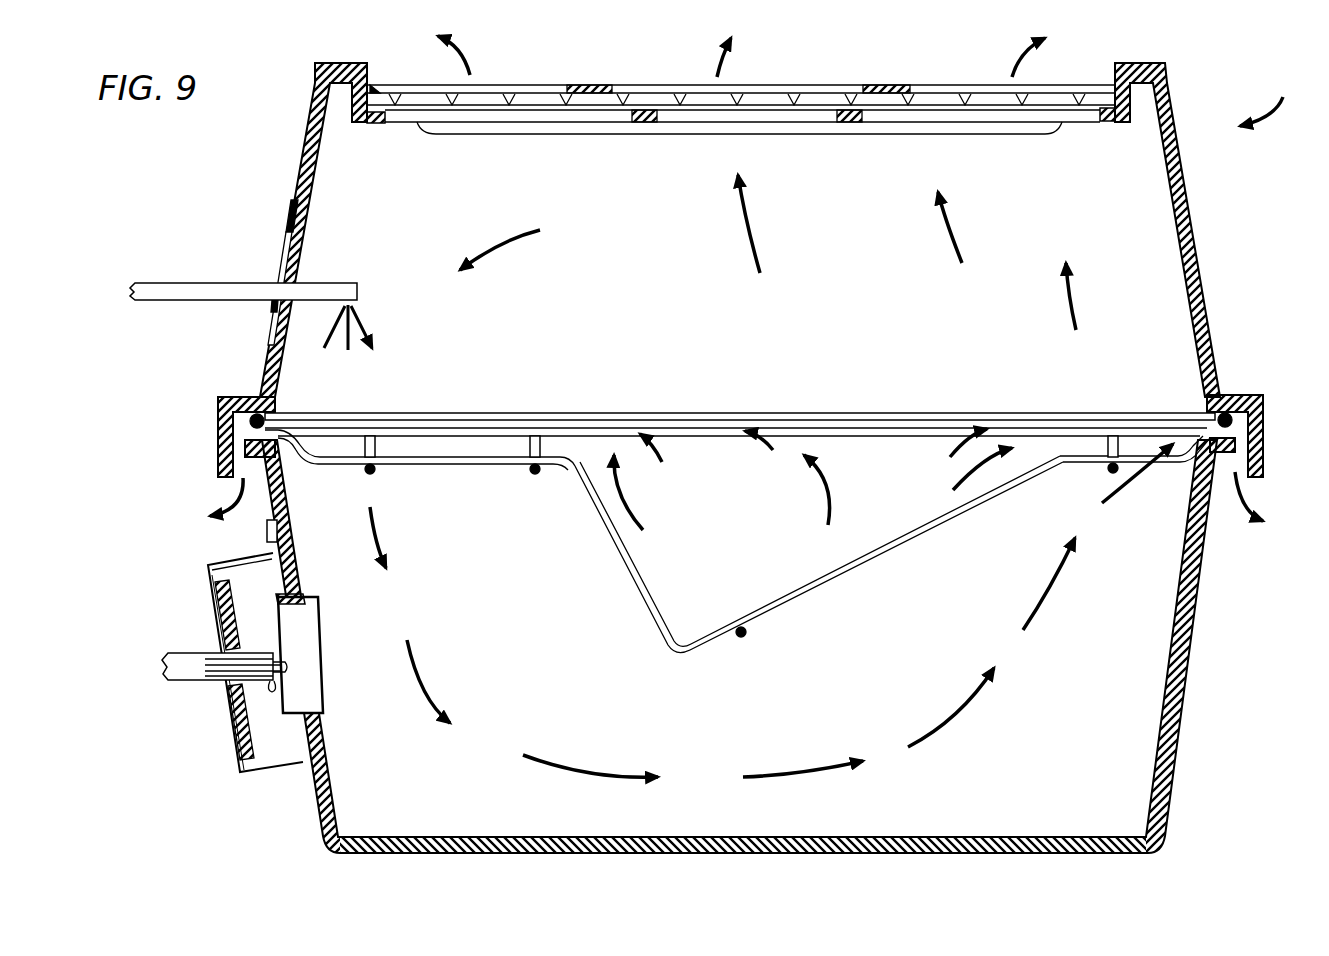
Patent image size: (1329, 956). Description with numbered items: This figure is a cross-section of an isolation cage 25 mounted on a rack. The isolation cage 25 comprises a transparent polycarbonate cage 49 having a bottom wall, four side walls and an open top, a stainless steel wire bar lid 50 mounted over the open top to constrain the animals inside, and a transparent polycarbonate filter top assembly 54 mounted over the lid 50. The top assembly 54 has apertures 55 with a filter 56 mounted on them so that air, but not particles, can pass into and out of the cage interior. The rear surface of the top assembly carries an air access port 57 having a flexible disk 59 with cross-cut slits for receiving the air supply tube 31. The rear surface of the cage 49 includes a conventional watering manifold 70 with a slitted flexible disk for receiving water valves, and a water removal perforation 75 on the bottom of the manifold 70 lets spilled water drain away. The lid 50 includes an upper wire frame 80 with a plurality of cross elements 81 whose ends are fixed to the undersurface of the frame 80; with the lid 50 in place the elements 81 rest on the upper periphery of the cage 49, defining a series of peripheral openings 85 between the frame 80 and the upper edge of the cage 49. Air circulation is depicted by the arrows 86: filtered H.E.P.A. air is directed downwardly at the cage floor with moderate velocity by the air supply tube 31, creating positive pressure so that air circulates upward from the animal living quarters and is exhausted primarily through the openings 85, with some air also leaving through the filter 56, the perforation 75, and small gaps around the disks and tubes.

The isolation cage 25 is at (1272, 101).
The air supply tube 31 is at (358, 283).
The transparent polycarbonate cage 49 is at (1190, 632).
The stainless steel wire bar lid 50 is at (858, 567).
The filter top assembly 54 is at (1197, 250).
The apertures 55 is at (940, 92).
The filter 56 is at (540, 92).
The air access port 57 is at (285, 250).
The flexible disk 59 is at (276, 306).
The watering manifold 70 is at (206, 578).
The water removal perforation 75 is at (275, 772).
The upper wire frame 80 is at (593, 413).
The cross elements 81 is at (512, 440).
The peripheral openings 85 is at (440, 428).
The arrows 86 is at (358, 317).